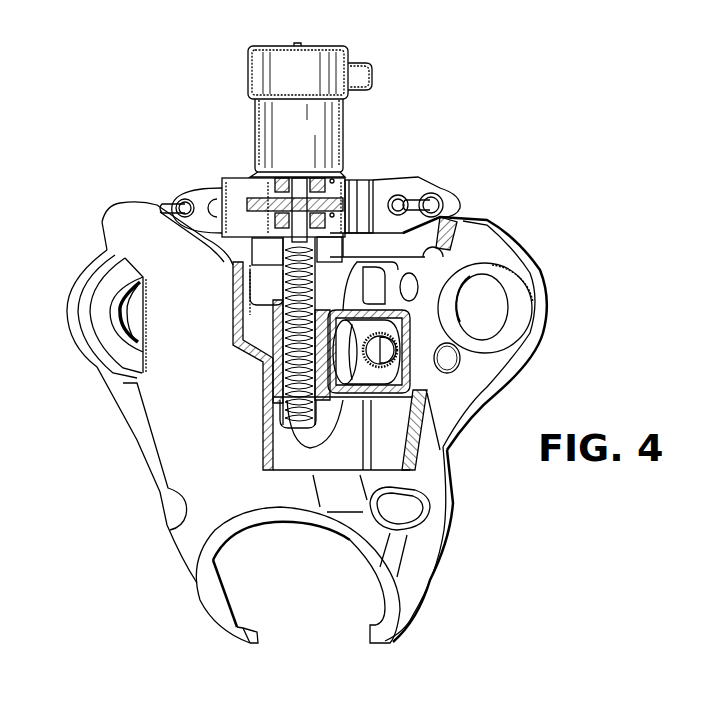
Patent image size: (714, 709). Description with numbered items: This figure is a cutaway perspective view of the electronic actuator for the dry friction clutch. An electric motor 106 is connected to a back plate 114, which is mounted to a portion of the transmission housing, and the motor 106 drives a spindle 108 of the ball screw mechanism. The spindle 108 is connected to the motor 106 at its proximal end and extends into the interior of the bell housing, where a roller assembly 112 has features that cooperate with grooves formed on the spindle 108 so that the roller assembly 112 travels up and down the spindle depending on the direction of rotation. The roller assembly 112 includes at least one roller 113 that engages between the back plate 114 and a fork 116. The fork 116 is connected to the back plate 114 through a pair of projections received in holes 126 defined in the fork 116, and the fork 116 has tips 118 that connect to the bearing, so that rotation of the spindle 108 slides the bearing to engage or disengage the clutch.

The electric motor 106 is at (323, 65).
The back plate 114 is at (380, 192).
The roller assembly 112 is at (347, 300).
The holes 126 is at (120, 303).
The spindle 108 is at (292, 422).
The roller 113 is at (365, 390).
The fork 116 is at (193, 583).
The tips 118 is at (258, 641).